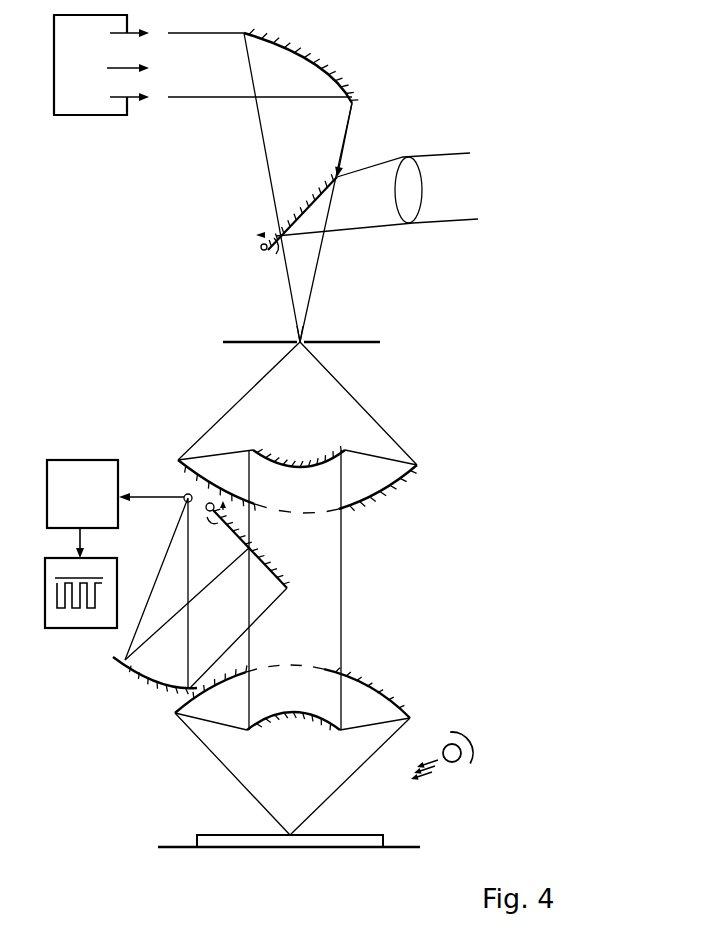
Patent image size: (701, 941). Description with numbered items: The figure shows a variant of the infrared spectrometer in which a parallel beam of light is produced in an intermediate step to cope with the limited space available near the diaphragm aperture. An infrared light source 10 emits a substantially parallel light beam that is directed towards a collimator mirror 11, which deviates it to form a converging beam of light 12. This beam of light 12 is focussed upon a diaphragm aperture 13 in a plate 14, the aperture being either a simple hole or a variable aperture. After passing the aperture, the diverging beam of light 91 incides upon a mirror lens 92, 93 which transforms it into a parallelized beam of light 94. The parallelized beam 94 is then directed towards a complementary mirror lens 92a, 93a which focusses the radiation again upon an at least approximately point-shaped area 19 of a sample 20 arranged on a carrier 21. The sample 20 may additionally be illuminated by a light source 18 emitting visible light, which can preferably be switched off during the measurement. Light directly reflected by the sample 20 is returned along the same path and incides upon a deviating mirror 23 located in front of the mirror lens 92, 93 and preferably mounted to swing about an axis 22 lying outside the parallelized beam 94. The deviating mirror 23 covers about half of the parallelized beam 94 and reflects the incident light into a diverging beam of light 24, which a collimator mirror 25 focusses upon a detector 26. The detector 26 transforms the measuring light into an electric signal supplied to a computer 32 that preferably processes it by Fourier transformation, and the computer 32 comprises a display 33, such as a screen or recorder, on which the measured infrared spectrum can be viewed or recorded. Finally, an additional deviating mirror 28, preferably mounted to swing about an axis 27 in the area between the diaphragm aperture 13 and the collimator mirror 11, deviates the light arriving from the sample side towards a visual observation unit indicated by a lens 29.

The infrared light source 10 is at (95, 105).
The collimator mirror 11 is at (318, 62).
The converging beam of light 12 is at (277, 127).
The diaphragm aperture 13 is at (303, 338).
The plate 14 is at (362, 344).
The light source 18 is at (449, 769).
The point-shaped area 19 is at (293, 828).
The sample 20 is at (226, 838).
The carrier 21 is at (178, 845).
The axis 22 is at (187, 478).
The deviating mirror 23 is at (275, 563).
The diverging beam of light 24 is at (208, 583).
The collimator mirror 25 is at (163, 688).
The detector 26 is at (185, 497).
The axis 27 is at (262, 249).
The deviating mirror 28 is at (297, 208).
The lens 29 is at (413, 190).
The computer 32 is at (76, 473).
The display 33 is at (95, 620).
The diverging beam of light 91 is at (347, 407).
The mirror lens 92 is at (292, 463).
The mirror lens 93 is at (393, 485).
The parallelized beam of light 94 is at (333, 592).
The complementary mirror lens 92a is at (293, 716).
The complementary mirror lens 93a is at (387, 683).